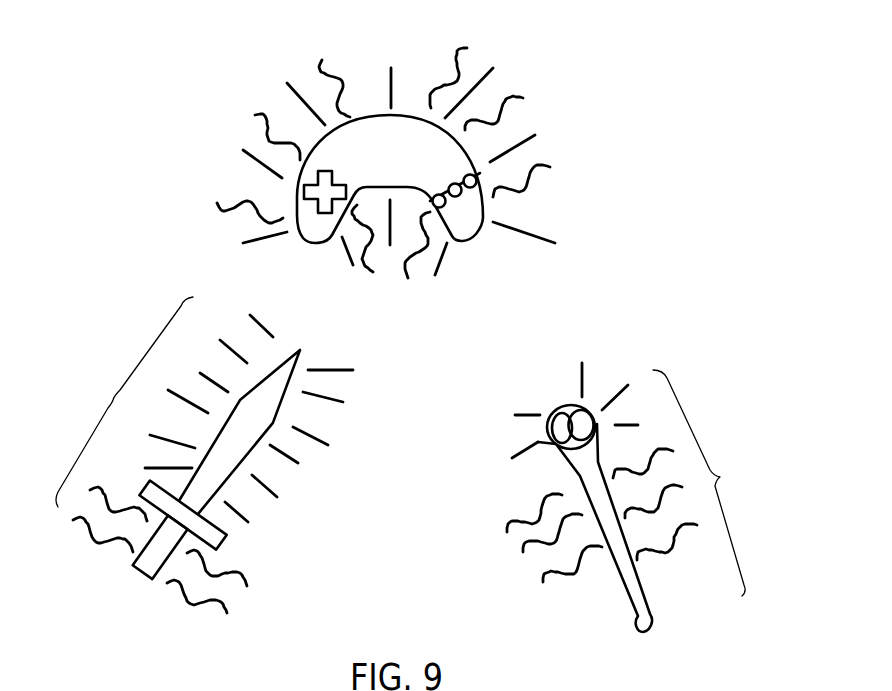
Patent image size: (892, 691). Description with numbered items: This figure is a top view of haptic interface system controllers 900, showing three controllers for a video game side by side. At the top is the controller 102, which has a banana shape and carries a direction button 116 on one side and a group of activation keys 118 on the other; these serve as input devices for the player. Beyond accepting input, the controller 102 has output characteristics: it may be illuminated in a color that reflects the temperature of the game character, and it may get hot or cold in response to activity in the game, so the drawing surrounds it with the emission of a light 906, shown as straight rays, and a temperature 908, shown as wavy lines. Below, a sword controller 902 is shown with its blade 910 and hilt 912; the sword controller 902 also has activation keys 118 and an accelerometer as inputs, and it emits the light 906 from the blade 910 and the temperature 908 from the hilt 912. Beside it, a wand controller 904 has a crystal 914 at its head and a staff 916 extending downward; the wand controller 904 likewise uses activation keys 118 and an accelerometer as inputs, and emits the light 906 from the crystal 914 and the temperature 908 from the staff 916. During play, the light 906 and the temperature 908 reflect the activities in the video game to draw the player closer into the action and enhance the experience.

The haptic interface system controllers 900 is at (163, 65).
The controller 102 is at (410, 162).
The direction button 116 is at (303, 193).
The activation keys 118 is at (484, 220).
The sword controller 902 is at (113, 397).
The wand controller 904 is at (720, 477).
The light 906 is at (528, 232).
The temperature 908 is at (518, 110).
The blade 910 is at (257, 423).
The hilt 912 is at (158, 552).
The crystal 914 is at (557, 403).
The staff 916 is at (623, 584).